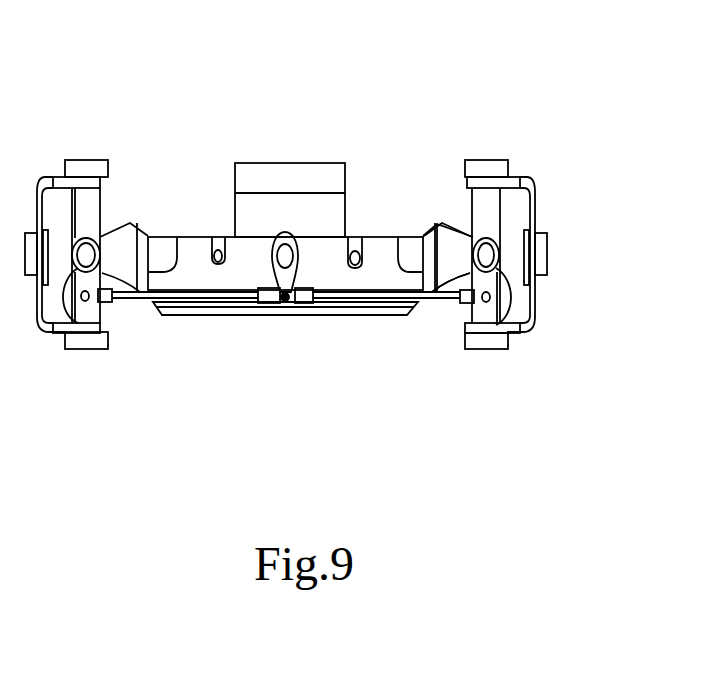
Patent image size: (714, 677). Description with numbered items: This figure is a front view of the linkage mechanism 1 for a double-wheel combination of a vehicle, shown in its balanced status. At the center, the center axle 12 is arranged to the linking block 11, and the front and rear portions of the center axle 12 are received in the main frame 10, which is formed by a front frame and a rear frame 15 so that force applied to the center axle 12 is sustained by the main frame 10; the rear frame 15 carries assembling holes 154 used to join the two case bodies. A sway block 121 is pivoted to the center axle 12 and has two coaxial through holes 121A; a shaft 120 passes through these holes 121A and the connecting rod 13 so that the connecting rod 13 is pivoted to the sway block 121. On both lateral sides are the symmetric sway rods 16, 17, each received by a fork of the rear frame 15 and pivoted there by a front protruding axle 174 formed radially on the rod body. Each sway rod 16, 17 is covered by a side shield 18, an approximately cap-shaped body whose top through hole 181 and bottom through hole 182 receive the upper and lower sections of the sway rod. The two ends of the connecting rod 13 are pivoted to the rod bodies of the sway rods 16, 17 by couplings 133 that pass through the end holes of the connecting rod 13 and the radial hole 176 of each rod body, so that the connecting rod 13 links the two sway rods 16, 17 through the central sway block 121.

The optical scanning device 1 is at (188, 163).
The main frame 10 is at (197, 320).
The linking block 11 is at (348, 170).
The center axle 12 is at (265, 260).
The connecting rod 13 is at (137, 305).
The rear frame 15 is at (367, 287).
The assembling holes 154 is at (355, 247).
The sway rod 16 is at (103, 208).
The sway rod 17 is at (467, 213).
The side shield 18 is at (543, 203).
The through hole 181 is at (488, 190).
The through hole 182 is at (483, 332).
The front protruding axle 174 is at (505, 283).
The radial hole 176 is at (490, 300).
The couplings 133 is at (562, 307).
The sway block 121 is at (290, 283).
The through holes 121A is at (285, 299).
The shaft 120 is at (297, 331).